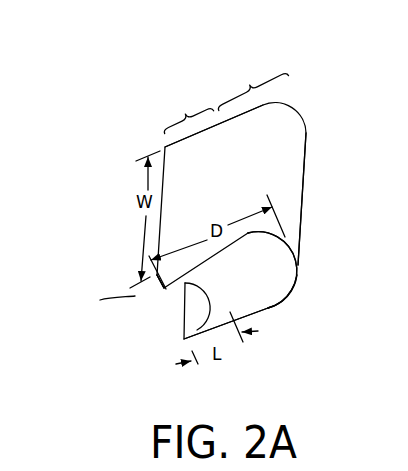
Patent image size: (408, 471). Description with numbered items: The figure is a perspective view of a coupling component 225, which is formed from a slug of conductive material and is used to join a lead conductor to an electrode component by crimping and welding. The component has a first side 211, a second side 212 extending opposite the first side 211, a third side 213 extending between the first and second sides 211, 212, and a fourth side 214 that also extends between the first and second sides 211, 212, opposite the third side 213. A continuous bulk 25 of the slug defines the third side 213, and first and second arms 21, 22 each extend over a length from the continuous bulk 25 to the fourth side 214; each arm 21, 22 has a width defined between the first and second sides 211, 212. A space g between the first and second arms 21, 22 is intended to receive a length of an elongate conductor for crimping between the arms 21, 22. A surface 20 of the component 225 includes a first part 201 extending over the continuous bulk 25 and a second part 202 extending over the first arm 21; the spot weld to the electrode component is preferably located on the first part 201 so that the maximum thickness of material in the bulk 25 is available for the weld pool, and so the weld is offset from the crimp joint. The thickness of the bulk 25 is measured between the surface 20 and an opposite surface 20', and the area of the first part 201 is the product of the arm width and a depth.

The surface 20 is at (231, 195).
The opposite surface 20' is at (253, 316).
The space g is at (177, 300).
The third side 213 is at (308, 185).
The second side 212 is at (207, 75).
The second part 202 is at (187, 108).
The first part 201 is at (252, 85).
The first arm 21 is at (164, 288).
The second arm 22 is at (184, 339).
The continuous bulk 25 is at (285, 263).
The first side 211 is at (253, 292).
The fourth side 214 is at (115, 328).
The coupling component 225 is at (78, 255).